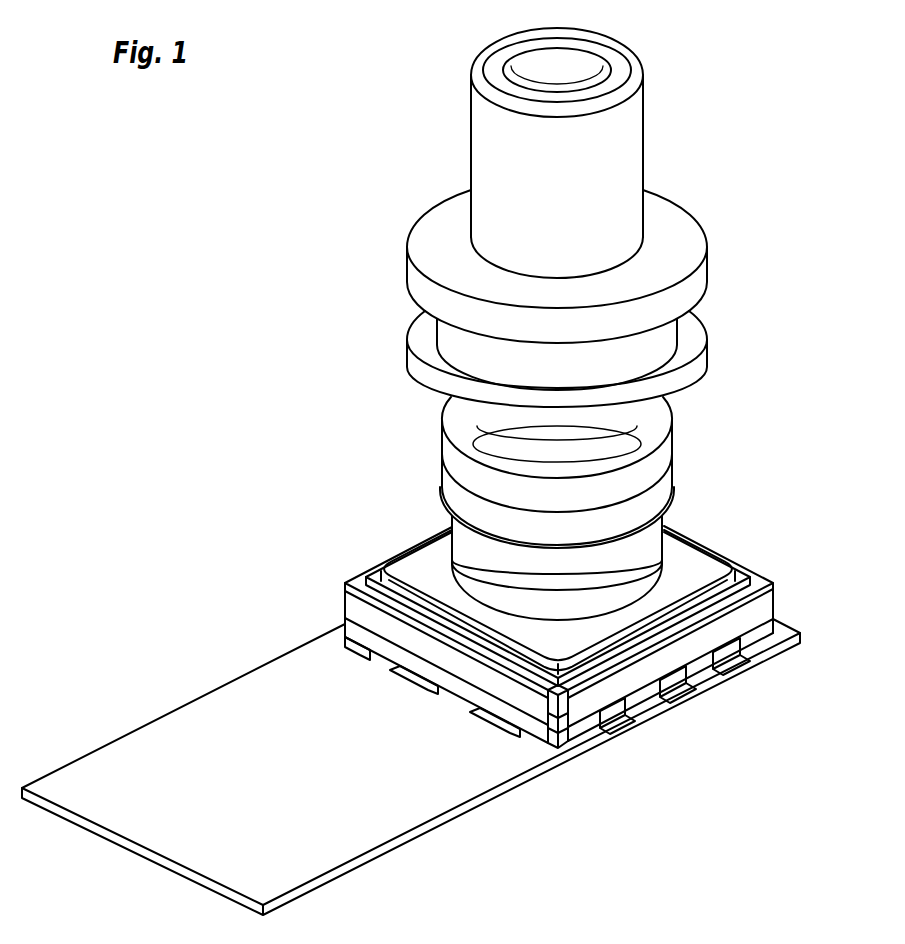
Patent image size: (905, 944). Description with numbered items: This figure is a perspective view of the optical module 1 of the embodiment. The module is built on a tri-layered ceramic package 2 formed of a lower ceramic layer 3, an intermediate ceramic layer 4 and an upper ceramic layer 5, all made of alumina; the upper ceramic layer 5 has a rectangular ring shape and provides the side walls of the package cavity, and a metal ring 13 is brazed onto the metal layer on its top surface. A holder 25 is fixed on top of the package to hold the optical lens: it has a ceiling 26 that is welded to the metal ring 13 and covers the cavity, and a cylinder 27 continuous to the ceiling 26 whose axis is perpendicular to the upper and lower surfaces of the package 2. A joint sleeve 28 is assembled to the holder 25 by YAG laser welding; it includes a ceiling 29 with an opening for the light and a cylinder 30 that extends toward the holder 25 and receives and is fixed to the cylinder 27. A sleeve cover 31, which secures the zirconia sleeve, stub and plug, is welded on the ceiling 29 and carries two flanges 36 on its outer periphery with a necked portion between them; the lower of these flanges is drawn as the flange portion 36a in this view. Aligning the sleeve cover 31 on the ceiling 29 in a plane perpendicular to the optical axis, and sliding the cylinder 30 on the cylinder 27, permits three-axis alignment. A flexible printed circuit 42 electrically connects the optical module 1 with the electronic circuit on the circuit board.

The optical module 1 is at (216, 246).
The tri-layered ceramic package 2 is at (766, 568).
The lower ceramic layer 3 is at (633, 702).
The intermediate ceramic layer 4 is at (697, 664).
The upper ceramic layer 5 is at (741, 620).
The metal ring 13 is at (367, 580).
The holder 25 is at (723, 545).
The ceiling 26 is at (407, 562).
The cylinder 27 is at (503, 608).
The joint sleeve 28 is at (437, 444).
The ceiling 29 is at (652, 440).
The cylinder 30 is at (657, 493).
The sleeve cover 31 is at (622, 140).
The flanges 36 is at (690, 221).
The lower flange portion 36a is at (680, 322).
The flexible printed circuit 42 is at (166, 718).